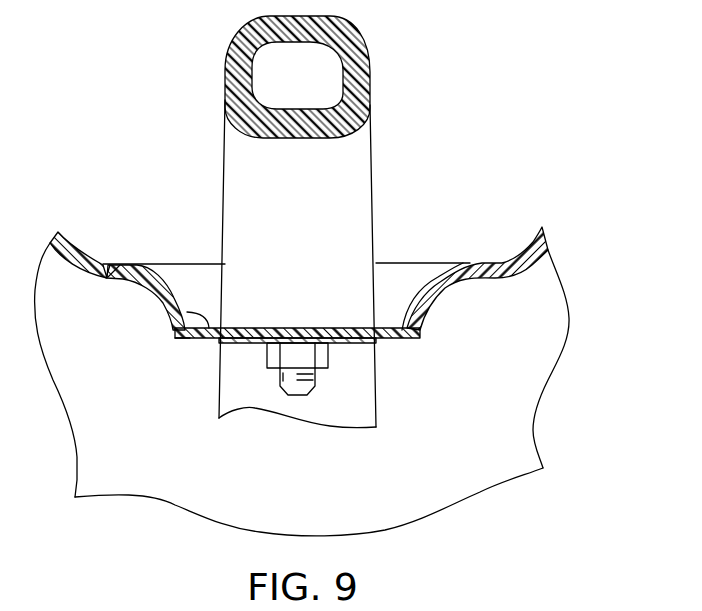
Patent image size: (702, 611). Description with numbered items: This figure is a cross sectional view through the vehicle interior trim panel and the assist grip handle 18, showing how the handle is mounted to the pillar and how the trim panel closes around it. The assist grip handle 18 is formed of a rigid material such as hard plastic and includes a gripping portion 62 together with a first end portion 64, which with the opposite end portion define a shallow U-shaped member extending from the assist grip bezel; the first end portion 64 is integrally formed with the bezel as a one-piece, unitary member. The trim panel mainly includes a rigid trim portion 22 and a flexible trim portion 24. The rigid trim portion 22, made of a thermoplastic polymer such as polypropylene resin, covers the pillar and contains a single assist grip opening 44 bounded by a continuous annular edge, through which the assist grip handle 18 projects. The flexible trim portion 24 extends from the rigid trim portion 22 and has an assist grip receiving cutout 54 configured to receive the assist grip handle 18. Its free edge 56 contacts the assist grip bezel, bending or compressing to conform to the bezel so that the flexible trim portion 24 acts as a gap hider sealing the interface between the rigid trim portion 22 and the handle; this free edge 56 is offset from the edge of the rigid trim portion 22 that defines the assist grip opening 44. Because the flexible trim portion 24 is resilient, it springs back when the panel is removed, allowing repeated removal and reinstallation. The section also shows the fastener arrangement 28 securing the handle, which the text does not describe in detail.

The assist grip handle 18 is at (245, 28).
The gripping portion 62 is at (348, 45).
The first end portion 64 is at (312, 233).
The rigid trim portion 22 is at (73, 253).
The flexible trim portion 24 is at (168, 287).
The mounting plate 28 is at (393, 325).
The assist grip receiving cutout 54 is at (206, 343).
The free edge 56 is at (182, 339).
The assist grip opening 44 is at (463, 264).